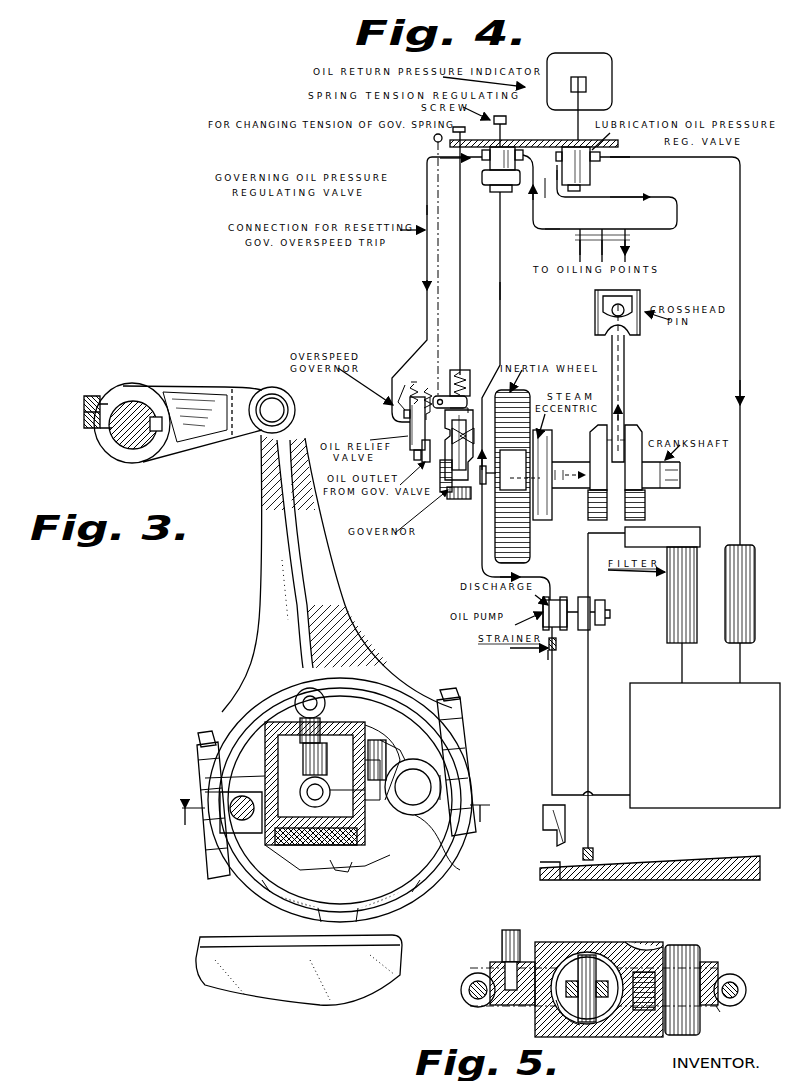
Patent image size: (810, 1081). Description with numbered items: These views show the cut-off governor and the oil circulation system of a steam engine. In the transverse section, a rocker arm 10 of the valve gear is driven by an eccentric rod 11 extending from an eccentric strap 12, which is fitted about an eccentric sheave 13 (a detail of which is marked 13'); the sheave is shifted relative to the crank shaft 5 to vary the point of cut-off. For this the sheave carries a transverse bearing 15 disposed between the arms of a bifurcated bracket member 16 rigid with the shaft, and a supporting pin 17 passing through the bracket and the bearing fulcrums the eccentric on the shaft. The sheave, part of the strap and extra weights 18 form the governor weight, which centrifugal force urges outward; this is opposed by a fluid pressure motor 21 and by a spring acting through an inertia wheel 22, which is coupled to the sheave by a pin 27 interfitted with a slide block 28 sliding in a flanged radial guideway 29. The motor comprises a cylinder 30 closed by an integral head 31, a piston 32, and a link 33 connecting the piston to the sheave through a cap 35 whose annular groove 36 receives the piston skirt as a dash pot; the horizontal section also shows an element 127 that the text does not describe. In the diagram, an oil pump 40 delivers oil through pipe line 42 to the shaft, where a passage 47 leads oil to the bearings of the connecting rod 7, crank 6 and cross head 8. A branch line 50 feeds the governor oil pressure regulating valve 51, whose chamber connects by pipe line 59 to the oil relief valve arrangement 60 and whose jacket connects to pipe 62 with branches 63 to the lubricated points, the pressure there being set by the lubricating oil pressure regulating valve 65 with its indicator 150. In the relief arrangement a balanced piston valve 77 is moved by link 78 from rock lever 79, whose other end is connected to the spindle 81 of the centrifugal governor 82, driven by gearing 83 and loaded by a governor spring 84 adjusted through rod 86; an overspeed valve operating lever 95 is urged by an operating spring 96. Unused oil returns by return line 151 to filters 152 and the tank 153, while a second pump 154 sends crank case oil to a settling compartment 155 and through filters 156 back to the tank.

In FIG. 3, the crank shaft 5 is at (334, 806).
In FIG. 4, the crank shaft 5 is at (682, 477).
In FIG. 4, the crank 6 is at (630, 433).
In FIG. 4, the connecting rod 7 is at (626, 382).
In FIG. 4, the cross head 8 is at (596, 310).
In FIG. 3, the rocker arm 10 is at (222, 440).
In FIG. 3, the eccentric rod 11 is at (348, 630).
In FIG. 3, the eccentric strap 12 is at (212, 742).
In FIG. 5, the eccentric strap 12 is at (470, 1000).
In FIG. 3, the eccentric sheave 13 is at (340, 800).
In FIG. 5, the eccentric sheave 13 is at (623, 985).
In FIG. 3, the housing piece 13' is at (338, 879).
In FIG. 3, the transverse bearing 15 is at (455, 850).
In FIG. 5, the transverse bearing 15 is at (722, 1008).
In FIG. 3, the bracket member 16 is at (420, 748).
In FIG. 5, the bracket member 16 is at (655, 955).
In FIG. 3, the supporting pin 17 is at (445, 780).
In FIG. 5, the supporting pin 17 is at (690, 950).
In FIG. 3, the extra weights 18 is at (290, 998).
In FIG. 3, the fluid pressure motor 21 is at (280, 845).
In FIG. 5, the fluid pressure motor 21 is at (596, 955).
In FIG. 4, the inertia wheel 22 is at (526, 465).
In FIG. 3, the pin 27 is at (232, 815).
In FIG. 3, the slide block 28 is at (225, 795).
In FIG. 5, the slide block 28 is at (495, 965).
In FIG. 3, the flanged radial guideway 29 is at (225, 777).
In FIG. 3, the cylinder 30 is at (440, 770).
In FIG. 5, the cylinder 30 is at (585, 1020).
In FIG. 3, the integral head 31 is at (335, 845).
In FIG. 3, the piston 32 is at (278, 760).
In FIG. 5, the piston 32 is at (565, 1020).
In FIG. 3, the link 33 is at (328, 722).
In FIG. 3, the cap 35 is at (372, 722).
In FIG. 5, the cap 35 is at (610, 955).
In FIG. 3, the annular groove 36 is at (296, 688).
In FIG. 4, the oil pump 40 is at (540, 611).
In FIG. 4, the pipe line 42 is at (482, 548).
In FIG. 4, the duct or passage 47 is at (628, 356).
In FIG. 4, the branch line 50 is at (500, 350).
In FIG. 4, the governor oil pressure regulating valve 51 is at (498, 158).
In FIG. 4, the pipe line 59 is at (423, 266).
In FIG. 4, the oil relief valve arrangement 60 is at (408, 437).
In FIG. 4, the pipe 62 is at (548, 230).
In FIG. 4, the branches 63 is at (620, 242).
In FIG. 4, the lubricating oil pressure regulating valve 65 is at (590, 178).
In FIG. 4, the balanced piston valve 77 is at (432, 452).
In FIG. 4, the link 78 is at (426, 388).
In FIG. 4, the rock lever 79 is at (438, 396).
In FIG. 4, the spindle 81 is at (468, 400).
In FIG. 4, the centrifugal governor 82 is at (470, 432).
In FIG. 4, the gearing 83 is at (440, 478).
In FIG. 4, the governor spring 84 is at (468, 375).
In FIG. 4, the rod 86 is at (462, 272).
In FIG. 4, the valve operating lever 95 is at (405, 402).
In FIG. 4, the operating spring 96 is at (397, 400).
In FIG. 5, the pin 127 is at (520, 935).
In FIG. 4, the indicator 150 is at (586, 98).
In FIG. 4, the return line 151 is at (742, 322).
In FIG. 4, the filters 152 is at (755, 600).
In FIG. 4, the tank 153 is at (726, 719).
In FIG. 4, the second pump 154 is at (595, 632).
In FIG. 4, the settling compartment 155 is at (648, 530).
In FIG. 4, the filters 156 is at (668, 612).